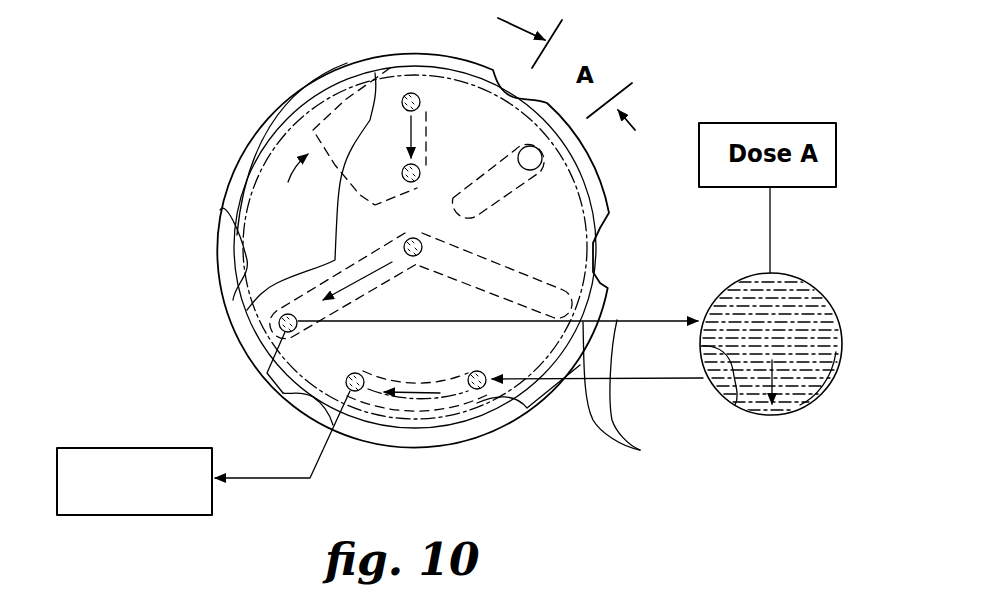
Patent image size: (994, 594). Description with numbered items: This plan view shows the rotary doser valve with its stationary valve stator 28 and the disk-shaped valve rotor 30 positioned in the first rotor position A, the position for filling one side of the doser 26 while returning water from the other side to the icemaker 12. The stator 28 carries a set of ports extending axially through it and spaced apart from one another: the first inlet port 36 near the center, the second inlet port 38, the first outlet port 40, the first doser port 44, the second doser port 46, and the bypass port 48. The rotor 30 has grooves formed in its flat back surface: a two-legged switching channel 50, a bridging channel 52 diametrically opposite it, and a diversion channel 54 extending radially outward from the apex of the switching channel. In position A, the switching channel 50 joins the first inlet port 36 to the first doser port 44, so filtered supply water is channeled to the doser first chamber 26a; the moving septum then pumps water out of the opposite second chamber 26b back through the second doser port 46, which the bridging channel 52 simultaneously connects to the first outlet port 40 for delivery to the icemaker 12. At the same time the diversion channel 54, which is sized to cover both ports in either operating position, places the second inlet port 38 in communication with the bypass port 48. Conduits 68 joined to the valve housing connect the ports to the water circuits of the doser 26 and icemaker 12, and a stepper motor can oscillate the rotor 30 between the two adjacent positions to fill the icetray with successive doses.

The icemaker 12 is at (128, 448).
The doser 26 is at (806, 284).
The first chamber 26a is at (771, 311).
The second chamber 26b is at (735, 405).
The valve stator 28 is at (297, 90).
The valve rotor 30 is at (252, 278).
The first inlet port 36 is at (417, 258).
The second inlet port 38 is at (428, 98).
The first outlet port 40 is at (346, 392).
The first doser port 44 is at (283, 335).
The second doser port 46 is at (477, 390).
The bypass port 48 is at (426, 170).
The switching channel 50 is at (490, 260).
The bridging channel 52 is at (413, 410).
The diversion channel 54 is at (363, 98).
The conduits 68 is at (636, 451).